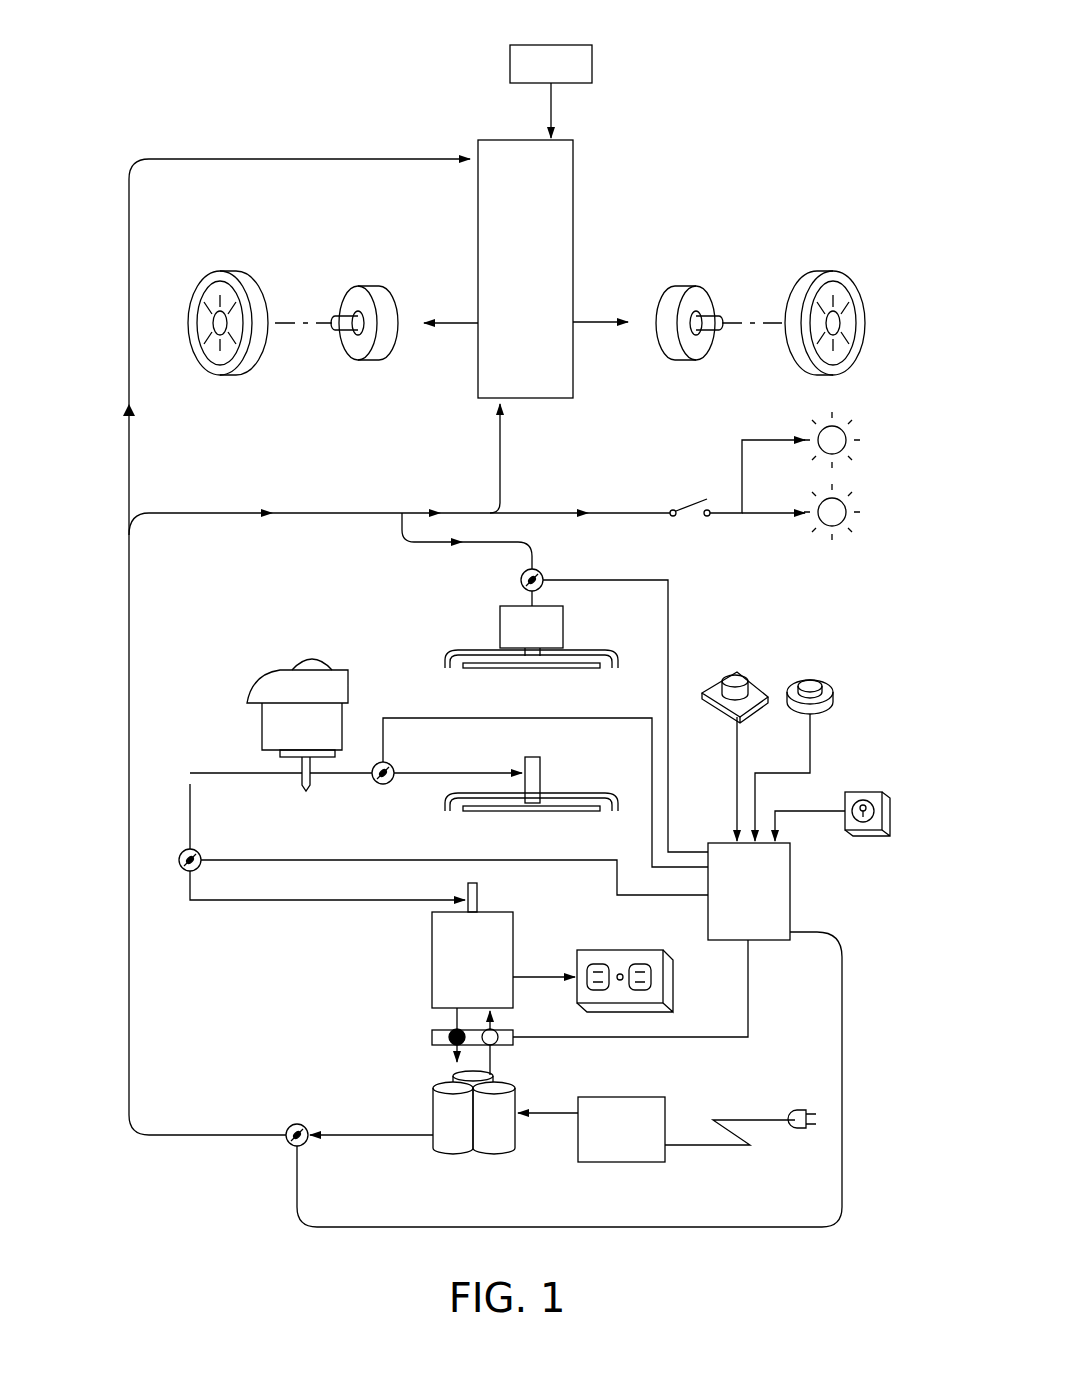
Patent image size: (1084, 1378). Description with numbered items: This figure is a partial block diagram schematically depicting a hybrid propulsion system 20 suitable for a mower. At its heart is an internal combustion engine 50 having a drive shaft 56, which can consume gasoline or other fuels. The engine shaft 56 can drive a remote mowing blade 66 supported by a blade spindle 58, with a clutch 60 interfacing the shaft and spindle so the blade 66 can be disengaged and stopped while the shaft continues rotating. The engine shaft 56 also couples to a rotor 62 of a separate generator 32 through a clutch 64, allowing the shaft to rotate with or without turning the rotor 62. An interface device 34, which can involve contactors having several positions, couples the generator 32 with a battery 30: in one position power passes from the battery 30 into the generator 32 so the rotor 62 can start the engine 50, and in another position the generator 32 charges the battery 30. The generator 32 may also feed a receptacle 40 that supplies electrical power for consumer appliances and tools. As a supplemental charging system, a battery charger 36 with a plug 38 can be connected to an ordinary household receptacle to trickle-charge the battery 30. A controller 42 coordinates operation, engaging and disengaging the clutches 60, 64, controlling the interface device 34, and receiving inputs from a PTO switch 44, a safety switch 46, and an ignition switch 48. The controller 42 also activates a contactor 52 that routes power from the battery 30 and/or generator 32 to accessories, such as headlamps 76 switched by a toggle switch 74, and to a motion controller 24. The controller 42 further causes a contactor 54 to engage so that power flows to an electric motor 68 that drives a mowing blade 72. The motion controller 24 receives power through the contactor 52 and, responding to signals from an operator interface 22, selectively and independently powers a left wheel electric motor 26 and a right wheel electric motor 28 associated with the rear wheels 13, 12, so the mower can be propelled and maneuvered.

The rear wheel 12 is at (830, 270).
The rear wheel 13 is at (226, 270).
The hybrid propulsion system 20 is at (288, 103).
The operator interface 22 is at (537, 79).
The motion controller 24 is at (511, 216).
The left wheel electric motor 26 is at (366, 286).
The right wheel electric motor 28 is at (685, 286).
The battery 30 is at (433, 1108).
The generator 32 is at (459, 976).
The interface device 34 is at (432, 1037).
The battery charger 36 is at (608, 1144).
The plug 38 is at (804, 1108).
The receptacle 40 is at (618, 950).
The controller 42 is at (734, 906).
The PTO switch 44 is at (735, 672).
The safety switch 46 is at (810, 680).
The ignition switch 48 is at (862, 792).
The internal combustion engine 50 is at (289, 743).
The contactor 52 is at (296, 1124).
The contactor 54 is at (541, 571).
The drive shaft 56 is at (302, 792).
The blade spindle 58 is at (540, 770).
The clutch 60 is at (383, 785).
The rotor 62 is at (477, 892).
The clutch 64 is at (198, 852).
The mowing blade 66 is at (560, 811).
The electric motor 68 is at (518, 641).
The mowing blade 72 is at (558, 668).
The toggle switch 74 is at (698, 500).
The headlamps 76 is at (862, 438).